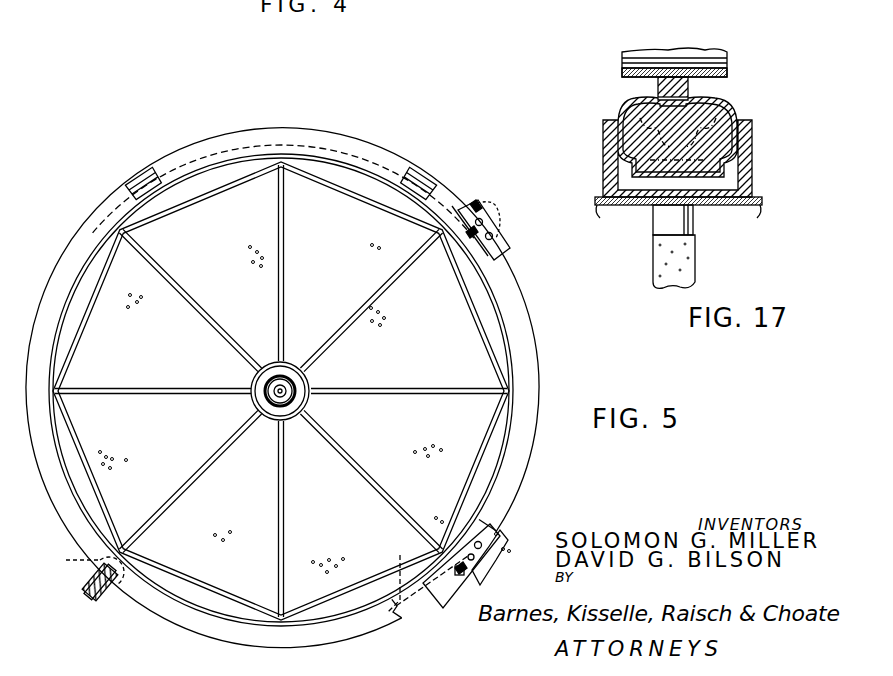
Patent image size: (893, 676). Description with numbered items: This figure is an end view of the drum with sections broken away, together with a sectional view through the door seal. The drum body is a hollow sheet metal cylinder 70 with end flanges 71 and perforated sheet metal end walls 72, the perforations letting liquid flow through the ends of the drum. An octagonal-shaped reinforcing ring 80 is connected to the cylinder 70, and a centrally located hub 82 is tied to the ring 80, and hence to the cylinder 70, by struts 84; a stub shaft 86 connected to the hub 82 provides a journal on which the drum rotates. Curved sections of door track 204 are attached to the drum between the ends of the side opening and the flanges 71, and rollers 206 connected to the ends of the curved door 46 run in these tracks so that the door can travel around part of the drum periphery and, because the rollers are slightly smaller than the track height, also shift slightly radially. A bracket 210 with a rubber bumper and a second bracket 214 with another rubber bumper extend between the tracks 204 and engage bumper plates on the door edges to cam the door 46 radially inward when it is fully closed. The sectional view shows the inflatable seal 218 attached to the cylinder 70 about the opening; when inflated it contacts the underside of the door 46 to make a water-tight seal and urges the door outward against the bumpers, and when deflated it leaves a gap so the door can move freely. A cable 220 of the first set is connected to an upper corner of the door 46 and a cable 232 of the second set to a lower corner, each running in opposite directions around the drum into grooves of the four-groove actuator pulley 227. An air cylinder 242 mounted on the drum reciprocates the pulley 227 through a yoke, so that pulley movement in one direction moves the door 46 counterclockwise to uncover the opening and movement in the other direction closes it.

In FIG. 5, the curved door 46 is at (303, 371).
In FIG. 17, the curved door 46 is at (690, 57).
In FIG. 5, the hollow sheet metal cylinder 70 is at (240, 158).
In FIG. 17, the hollow sheet metal cylinder 70 is at (758, 204).
In FIG. 5, the end flanges 71 is at (76, 243).
In FIG. 5, the perforated sheet metal end walls 72 is at (305, 404).
In FIG. 5, the octagonal-shaped reinforcing ring 80 is at (173, 210).
In FIG. 5, the hub 82 is at (284, 420).
In FIG. 5, the struts 84 is at (240, 347).
In FIG. 5, the stub shaft 86 is at (270, 394).
In FIG. 5, the door track 204 is at (144, 186).
In FIG. 5, the rollers 206 is at (494, 256).
In FIG. 5, the bracket 210 is at (468, 580).
In FIG. 5, the second bracket 214 is at (498, 222).
In FIG. 17, the inflatable seal 218 is at (608, 136).
In FIG. 5, the cable 220 is at (449, 210).
In FIG. 5, the four-groove actuator pulley 227 is at (110, 602).
In FIG. 5, the cable 232 is at (400, 556).
In FIG. 5, the air cylinder 242 is at (75, 560).